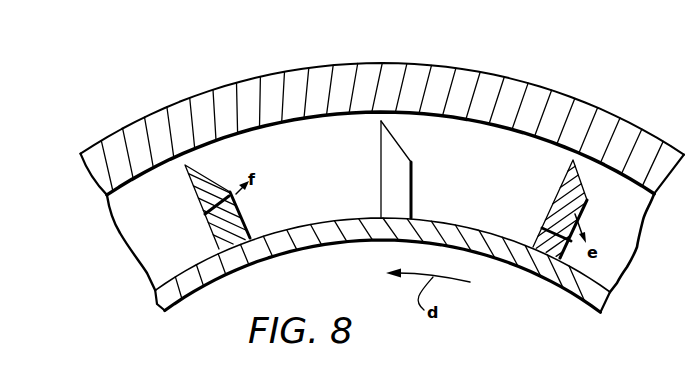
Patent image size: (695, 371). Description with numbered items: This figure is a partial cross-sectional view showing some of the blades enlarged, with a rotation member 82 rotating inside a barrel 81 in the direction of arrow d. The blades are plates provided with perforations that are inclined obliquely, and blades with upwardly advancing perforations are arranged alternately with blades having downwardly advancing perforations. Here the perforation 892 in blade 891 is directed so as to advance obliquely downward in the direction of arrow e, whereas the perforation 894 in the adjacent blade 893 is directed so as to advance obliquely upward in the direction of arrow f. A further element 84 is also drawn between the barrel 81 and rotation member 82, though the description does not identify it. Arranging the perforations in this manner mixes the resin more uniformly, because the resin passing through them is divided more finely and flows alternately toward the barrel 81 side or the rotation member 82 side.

The barrel 81 is at (347, 77).
The rotation member 82 is at (360, 232).
The central fin 84 is at (442, 155).
The blade 891 is at (578, 193).
The perforation 892 is at (558, 203).
The blade 893 is at (208, 186).
The perforation 894 is at (242, 204).